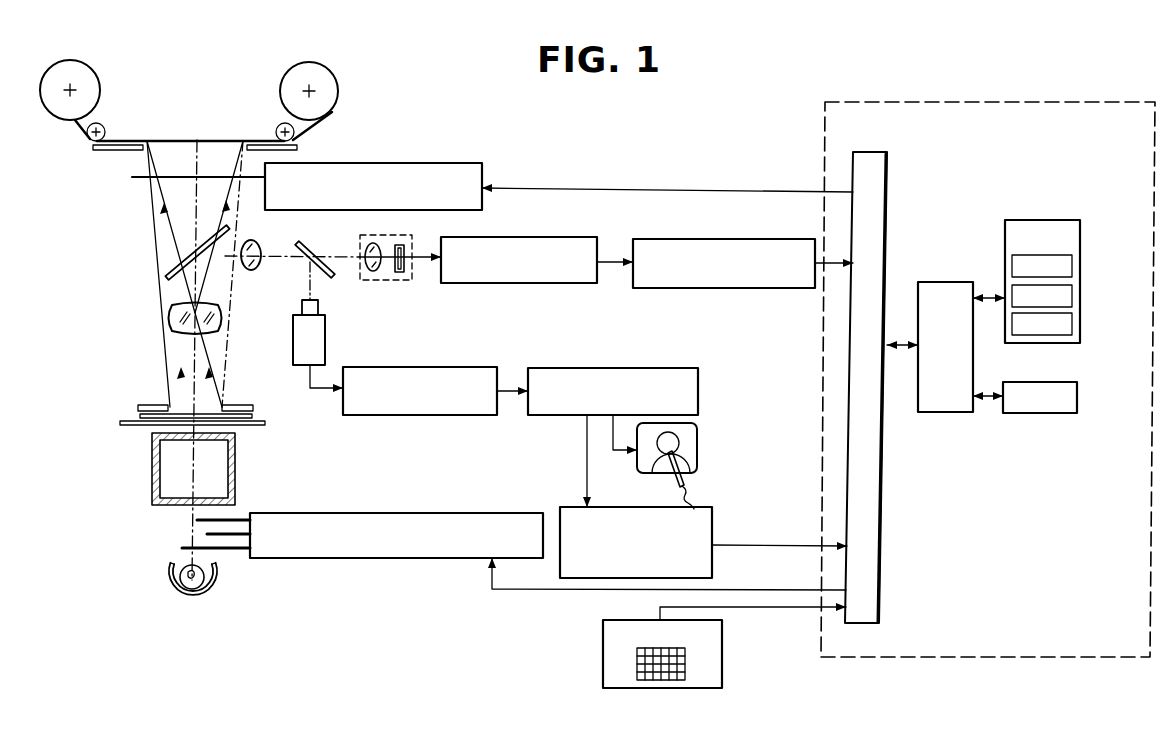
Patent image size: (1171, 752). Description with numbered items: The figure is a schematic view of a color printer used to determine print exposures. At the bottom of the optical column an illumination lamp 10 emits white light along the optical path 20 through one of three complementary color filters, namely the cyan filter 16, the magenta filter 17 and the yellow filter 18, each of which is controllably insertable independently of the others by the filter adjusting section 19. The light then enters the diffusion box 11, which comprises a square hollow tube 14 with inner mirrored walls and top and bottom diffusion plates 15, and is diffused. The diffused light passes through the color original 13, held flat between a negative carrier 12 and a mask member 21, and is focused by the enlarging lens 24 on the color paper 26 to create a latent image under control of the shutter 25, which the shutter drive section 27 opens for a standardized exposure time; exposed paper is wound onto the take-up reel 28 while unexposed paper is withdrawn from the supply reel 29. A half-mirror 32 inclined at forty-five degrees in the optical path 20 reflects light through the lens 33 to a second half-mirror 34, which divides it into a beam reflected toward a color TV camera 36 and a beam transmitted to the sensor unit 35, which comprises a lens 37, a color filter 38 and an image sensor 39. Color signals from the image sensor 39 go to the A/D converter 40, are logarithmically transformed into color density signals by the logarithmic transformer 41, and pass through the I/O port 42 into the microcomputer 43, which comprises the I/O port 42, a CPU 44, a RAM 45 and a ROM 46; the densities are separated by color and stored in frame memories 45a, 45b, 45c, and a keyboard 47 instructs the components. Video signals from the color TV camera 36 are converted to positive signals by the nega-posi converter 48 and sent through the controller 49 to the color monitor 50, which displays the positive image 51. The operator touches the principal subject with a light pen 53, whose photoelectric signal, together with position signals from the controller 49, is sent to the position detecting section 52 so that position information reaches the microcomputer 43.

The illumination lamp 10 is at (182, 590).
The diffusion box 11 is at (159, 489).
The negative carrier 12 is at (250, 427).
The color original 13 is at (138, 405).
The square hollow tube 14 is at (153, 455).
The diffusion plates 15 is at (182, 492).
The cyan color filter 16 is at (246, 551).
The magenta color filter 17 is at (228, 538).
The yellow color filter 18 is at (240, 516).
The filter adjusting section 19 is at (510, 513).
The optical path 20 is at (199, 356).
The mask member 21 is at (248, 405).
The enlarging lens 24 is at (168, 318).
The shutter 25 is at (138, 180).
The color paper 26 is at (218, 140).
The shutter drive section 27 is at (465, 163).
The take-up reel 28 is at (335, 90).
The supply reel 29 is at (100, 83).
The half-mirror 32 is at (173, 267).
The lens 33 is at (250, 240).
The half-mirror 34 is at (310, 248).
The sensor unit 35 is at (373, 281).
The color TV camera 36 is at (293, 330).
The lens 37 is at (370, 245).
The color filter 38 is at (399, 245).
The image sensor 39 is at (401, 273).
The A/D converter 40 is at (560, 237).
The logarithmic transformer 41 is at (748, 239).
The I/O port 42 is at (887, 455).
The microcomputer 43 is at (963, 102).
The CPU 44 is at (943, 282).
The RAM 45 is at (1073, 281).
The frame memory 45a is at (1072, 265).
The frame memory 45b is at (1072, 297).
The frame memory 45c is at (1072, 327).
The ROM 46 is at (1077, 398).
The keyboard 47 is at (603, 640).
The nega-posi converter 48 is at (470, 367).
The controller 49 is at (670, 368).
The color monitor 50 is at (700, 441).
The positive image 51 is at (676, 435).
The position detecting section 52 is at (715, 518).
The light pen 53 is at (686, 481).